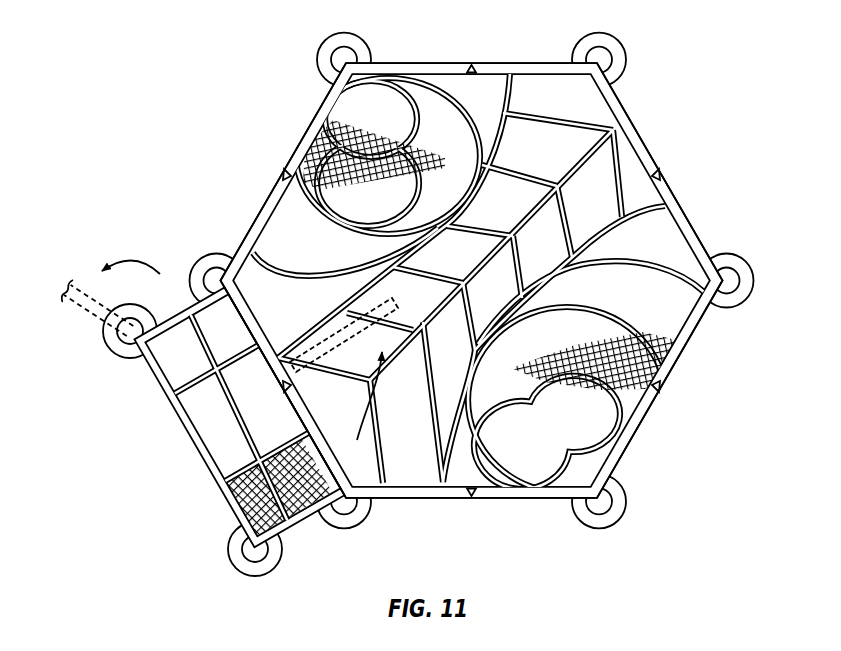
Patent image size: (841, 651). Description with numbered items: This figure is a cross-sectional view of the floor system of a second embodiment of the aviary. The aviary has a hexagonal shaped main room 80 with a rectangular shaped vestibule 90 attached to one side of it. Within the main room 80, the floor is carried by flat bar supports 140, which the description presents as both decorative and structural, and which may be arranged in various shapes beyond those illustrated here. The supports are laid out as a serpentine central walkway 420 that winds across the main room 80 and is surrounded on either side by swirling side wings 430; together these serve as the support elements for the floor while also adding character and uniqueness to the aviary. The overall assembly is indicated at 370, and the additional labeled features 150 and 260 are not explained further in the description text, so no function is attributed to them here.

The hexagonal frame assembly 370 is at (698, 41).
The swirling side wings 430 is at (445, 118).
The serpentine central walkway 420 is at (545, 100).
The flat bar supports 140 is at (620, 177).
The mesh panel 150 is at (652, 388).
The inner frame rail 260 is at (284, 179).
The main room 80 is at (291, 218).
The vestibule 90 is at (207, 417).